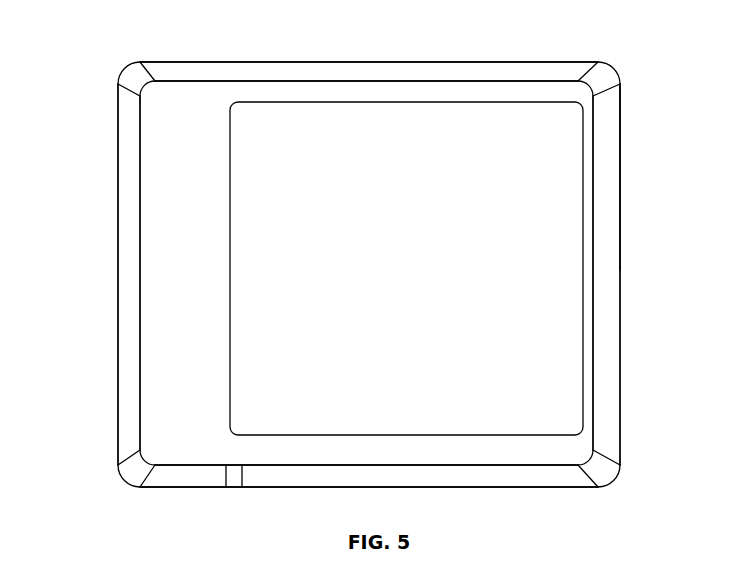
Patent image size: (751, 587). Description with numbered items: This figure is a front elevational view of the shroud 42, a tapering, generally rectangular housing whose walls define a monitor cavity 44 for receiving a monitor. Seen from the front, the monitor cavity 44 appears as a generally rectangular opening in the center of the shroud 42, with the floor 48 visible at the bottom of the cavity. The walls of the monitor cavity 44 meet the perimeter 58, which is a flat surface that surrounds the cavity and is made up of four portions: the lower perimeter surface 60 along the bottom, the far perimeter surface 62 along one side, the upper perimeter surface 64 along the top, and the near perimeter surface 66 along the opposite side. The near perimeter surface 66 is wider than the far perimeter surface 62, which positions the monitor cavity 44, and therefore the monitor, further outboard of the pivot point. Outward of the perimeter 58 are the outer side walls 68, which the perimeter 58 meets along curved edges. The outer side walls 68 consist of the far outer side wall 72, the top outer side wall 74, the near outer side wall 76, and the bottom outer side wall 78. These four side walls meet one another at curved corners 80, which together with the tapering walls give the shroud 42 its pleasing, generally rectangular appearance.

The shroud 42 is at (653, 230).
The monitor cavity 44 is at (292, 380).
The floor 48 is at (421, 280).
The perimeter 58 is at (365, 90).
The lower perimeter surface 60 is at (568, 452).
The far perimeter surface 62 is at (583, 282).
The upper perimeter surface 64 is at (512, 90).
The near perimeter surface 66 is at (177, 316).
The outer side walls 68 is at (606, 130).
The far outer side wall 72 is at (602, 338).
The top outer side wall 74 is at (231, 68).
The near outer side wall 76 is at (118, 172).
The bottom outer side wall 78 is at (197, 482).
The curved corners 80 is at (135, 78).